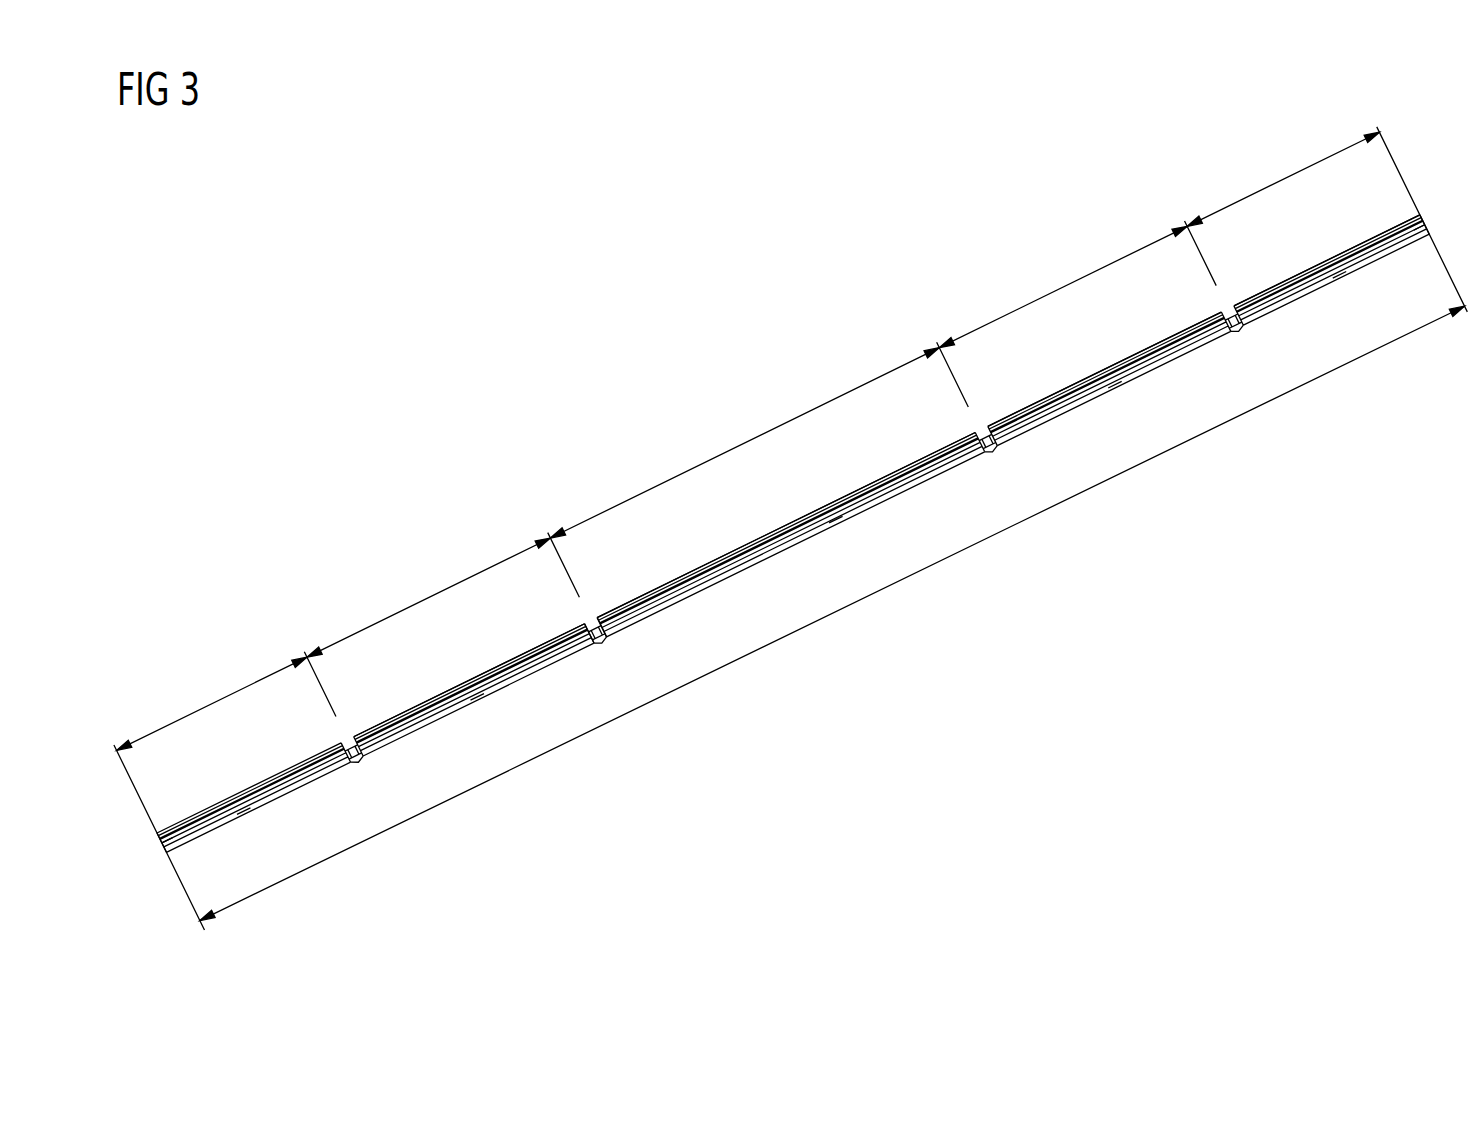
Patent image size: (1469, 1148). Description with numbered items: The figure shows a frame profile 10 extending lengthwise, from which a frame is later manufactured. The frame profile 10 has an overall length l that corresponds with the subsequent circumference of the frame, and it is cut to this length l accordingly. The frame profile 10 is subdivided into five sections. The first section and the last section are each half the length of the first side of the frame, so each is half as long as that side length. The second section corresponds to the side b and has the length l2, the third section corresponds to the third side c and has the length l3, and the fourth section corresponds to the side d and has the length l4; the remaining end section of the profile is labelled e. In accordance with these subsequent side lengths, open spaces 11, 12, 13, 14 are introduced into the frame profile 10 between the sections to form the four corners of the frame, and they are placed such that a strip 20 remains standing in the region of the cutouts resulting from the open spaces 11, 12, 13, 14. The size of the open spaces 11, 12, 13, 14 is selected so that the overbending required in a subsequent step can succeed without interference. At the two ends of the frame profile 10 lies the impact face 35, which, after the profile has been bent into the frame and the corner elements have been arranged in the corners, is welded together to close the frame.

The frame profile 10 is at (600, 385).
The open space 11 is at (1230, 306).
The open space 12 is at (344, 735).
The open space 13 is at (590, 620).
The open space 14 is at (984, 426).
The strip 20 is at (600, 640).
The impact face 35 is at (159, 851).
The side b is at (480, 693).
The third side c is at (790, 535).
The side d is at (1125, 380).
The section e is at (1335, 276).
The overall length l is at (745, 656).
The length of second section l2 is at (423, 600).
The length of third section l3 is at (750, 437).
The length of fourth section l4 is at (1060, 288).